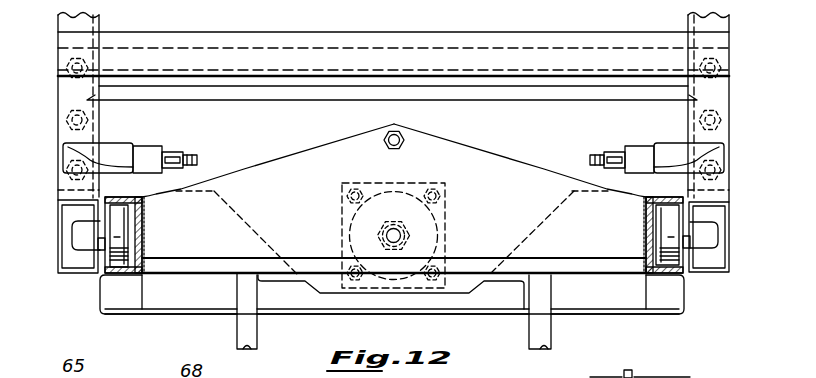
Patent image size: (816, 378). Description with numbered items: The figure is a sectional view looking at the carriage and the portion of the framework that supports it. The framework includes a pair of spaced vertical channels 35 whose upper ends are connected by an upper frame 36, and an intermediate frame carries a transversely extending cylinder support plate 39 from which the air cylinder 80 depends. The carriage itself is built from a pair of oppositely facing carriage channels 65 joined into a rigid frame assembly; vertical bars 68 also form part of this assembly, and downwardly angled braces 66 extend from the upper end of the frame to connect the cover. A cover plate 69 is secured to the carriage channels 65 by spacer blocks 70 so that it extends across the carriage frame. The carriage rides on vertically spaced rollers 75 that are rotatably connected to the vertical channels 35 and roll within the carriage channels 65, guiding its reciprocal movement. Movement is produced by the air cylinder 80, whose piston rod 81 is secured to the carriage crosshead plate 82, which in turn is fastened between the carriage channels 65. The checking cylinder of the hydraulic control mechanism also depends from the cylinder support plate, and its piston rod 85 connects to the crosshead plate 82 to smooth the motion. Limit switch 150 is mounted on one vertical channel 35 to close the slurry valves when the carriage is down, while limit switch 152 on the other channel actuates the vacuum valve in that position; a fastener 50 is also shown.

The vertical channel 35 is at (78, 201).
The upper frame 36 is at (476, 34).
The cylinder support plate 39 is at (242, 150).
The fastener 50 is at (630, 372).
The carriage channel 65 is at (120, 276).
The downwardly angled brace 66 is at (246, 347).
The vertical bar 68 is at (258, 328).
The cover plate 69 is at (170, 316).
The spacer block 70 is at (135, 290).
The roller 75 is at (120, 216).
The air cylinder 80 is at (405, 186).
The piston rod 81 is at (386, 232).
The carriage crosshead plate 82 is at (507, 159).
The piston rod 85 is at (385, 146).
The limit switch 150 is at (120, 148).
The limit switch 152 is at (663, 148).